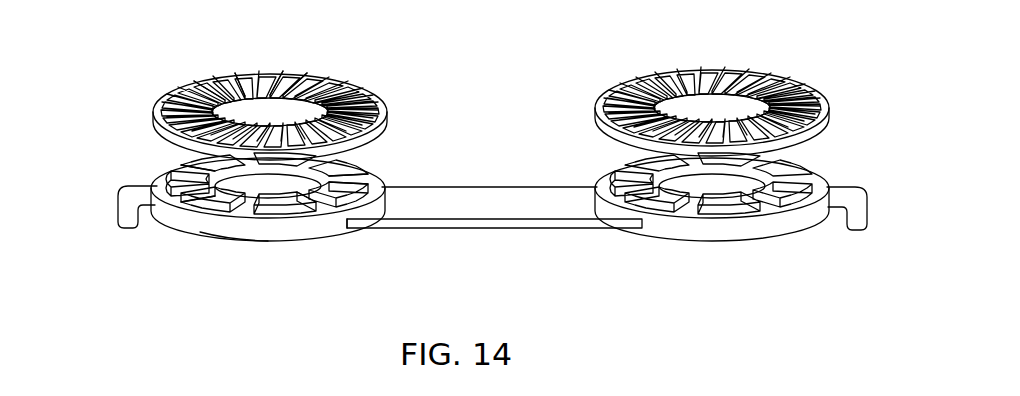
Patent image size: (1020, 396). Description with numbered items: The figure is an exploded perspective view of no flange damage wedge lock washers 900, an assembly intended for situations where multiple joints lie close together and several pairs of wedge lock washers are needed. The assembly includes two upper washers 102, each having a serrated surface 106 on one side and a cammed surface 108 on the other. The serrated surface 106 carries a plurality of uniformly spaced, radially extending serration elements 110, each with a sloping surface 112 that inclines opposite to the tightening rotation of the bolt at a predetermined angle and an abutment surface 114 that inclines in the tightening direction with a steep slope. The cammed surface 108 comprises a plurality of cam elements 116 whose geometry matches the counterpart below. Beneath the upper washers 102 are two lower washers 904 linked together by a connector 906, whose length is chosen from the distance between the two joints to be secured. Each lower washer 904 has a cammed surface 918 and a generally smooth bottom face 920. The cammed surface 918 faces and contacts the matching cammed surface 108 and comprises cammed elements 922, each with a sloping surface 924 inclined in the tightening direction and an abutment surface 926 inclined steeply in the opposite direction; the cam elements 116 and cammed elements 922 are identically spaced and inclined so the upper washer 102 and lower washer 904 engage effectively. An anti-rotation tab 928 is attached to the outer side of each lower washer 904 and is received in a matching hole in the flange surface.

The no flange damage wedge lock washers 900 is at (136, 69).
The upper washer 102 is at (155, 130).
The serrated surface 106 is at (200, 82).
The cammed surface 108 is at (175, 157).
The serration elements 110 is at (238, 75).
The sloping surface 112 is at (276, 77).
The abutment surface 114 is at (300, 86).
The cam elements 116 is at (345, 158).
The lower washer 904 is at (255, 228).
The connector 906 is at (483, 200).
The cammed surface 918 is at (370, 176).
The bottom face 920 is at (228, 240).
The cammed elements 922 is at (385, 210).
The sloping surface 924 is at (310, 205).
The abutment surface 926 is at (220, 212).
The anti-rotation tab 928 is at (118, 210).